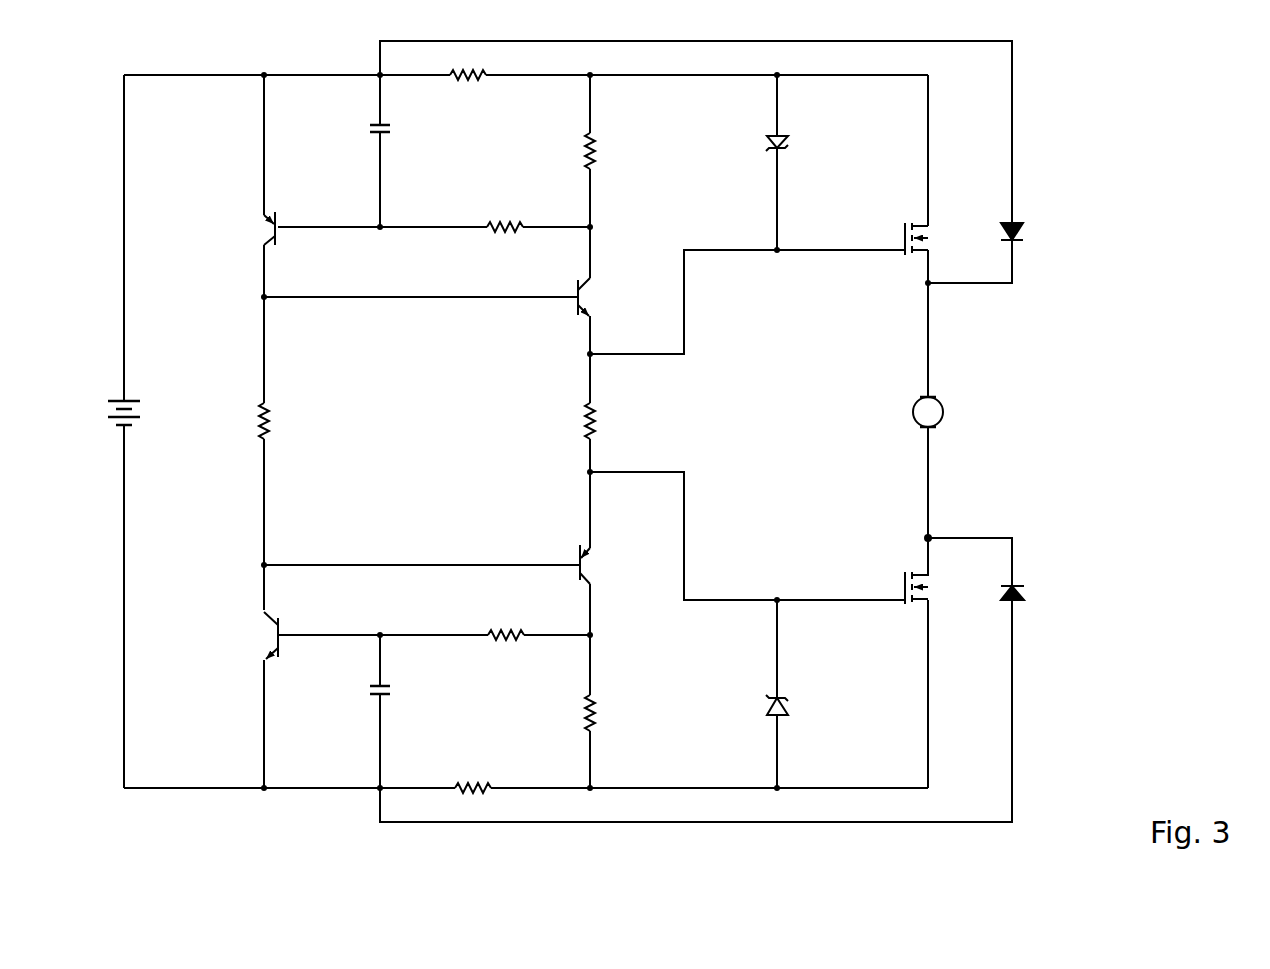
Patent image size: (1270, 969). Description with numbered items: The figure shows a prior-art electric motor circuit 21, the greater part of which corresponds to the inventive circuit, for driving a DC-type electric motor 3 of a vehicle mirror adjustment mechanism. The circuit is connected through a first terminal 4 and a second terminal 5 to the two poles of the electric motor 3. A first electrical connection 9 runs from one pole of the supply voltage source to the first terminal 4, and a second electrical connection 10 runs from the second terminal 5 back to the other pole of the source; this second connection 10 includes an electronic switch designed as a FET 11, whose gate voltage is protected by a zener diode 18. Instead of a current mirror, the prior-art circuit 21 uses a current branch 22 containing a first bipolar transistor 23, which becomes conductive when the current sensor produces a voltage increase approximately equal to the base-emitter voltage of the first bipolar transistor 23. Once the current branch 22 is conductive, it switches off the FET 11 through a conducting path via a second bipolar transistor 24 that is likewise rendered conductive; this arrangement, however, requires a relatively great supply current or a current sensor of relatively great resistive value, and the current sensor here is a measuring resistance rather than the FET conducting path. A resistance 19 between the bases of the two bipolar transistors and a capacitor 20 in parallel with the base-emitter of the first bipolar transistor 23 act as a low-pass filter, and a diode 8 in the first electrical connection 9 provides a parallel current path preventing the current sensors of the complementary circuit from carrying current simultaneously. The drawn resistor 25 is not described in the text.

The electric motor 3 is at (948, 403).
The first terminal 4 is at (926, 285).
The second terminal 5 is at (926, 537).
The diode 8 is at (1032, 223).
The first electrical connection 9 is at (1012, 141).
The second electrical connection 10 is at (843, 787).
The electronic switch (FET) 11 is at (898, 578).
The zener diode 18 is at (806, 703).
The resistance 19 is at (480, 624).
The capacitor 20 is at (362, 700).
The electric motor circuit 21 is at (1084, 266).
The current branch 22 is at (262, 488).
The first bipolar transistor 23 is at (258, 627).
The second bipolar transistor 24 is at (600, 558).
The resistor 25 is at (486, 780).